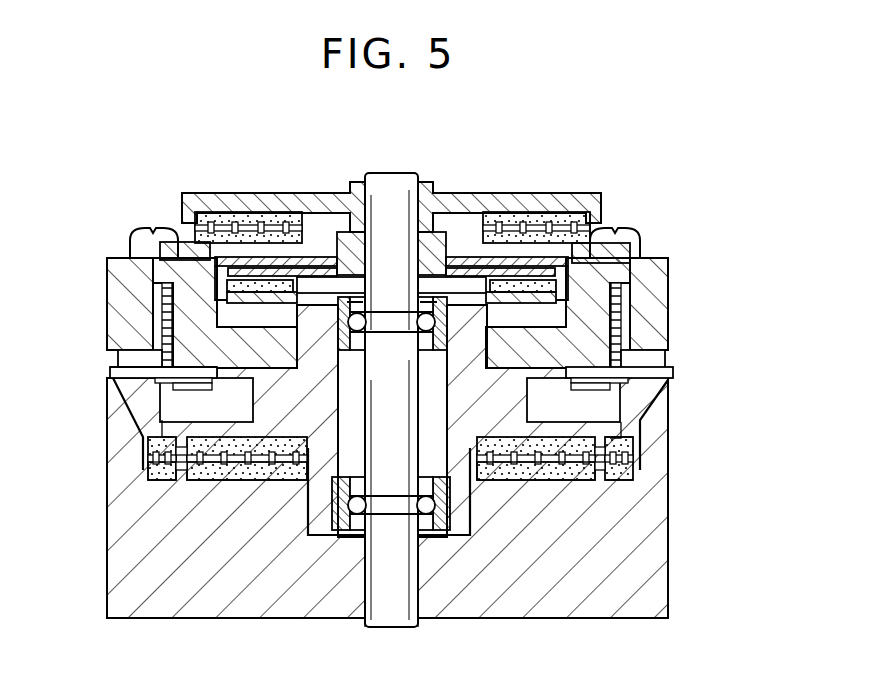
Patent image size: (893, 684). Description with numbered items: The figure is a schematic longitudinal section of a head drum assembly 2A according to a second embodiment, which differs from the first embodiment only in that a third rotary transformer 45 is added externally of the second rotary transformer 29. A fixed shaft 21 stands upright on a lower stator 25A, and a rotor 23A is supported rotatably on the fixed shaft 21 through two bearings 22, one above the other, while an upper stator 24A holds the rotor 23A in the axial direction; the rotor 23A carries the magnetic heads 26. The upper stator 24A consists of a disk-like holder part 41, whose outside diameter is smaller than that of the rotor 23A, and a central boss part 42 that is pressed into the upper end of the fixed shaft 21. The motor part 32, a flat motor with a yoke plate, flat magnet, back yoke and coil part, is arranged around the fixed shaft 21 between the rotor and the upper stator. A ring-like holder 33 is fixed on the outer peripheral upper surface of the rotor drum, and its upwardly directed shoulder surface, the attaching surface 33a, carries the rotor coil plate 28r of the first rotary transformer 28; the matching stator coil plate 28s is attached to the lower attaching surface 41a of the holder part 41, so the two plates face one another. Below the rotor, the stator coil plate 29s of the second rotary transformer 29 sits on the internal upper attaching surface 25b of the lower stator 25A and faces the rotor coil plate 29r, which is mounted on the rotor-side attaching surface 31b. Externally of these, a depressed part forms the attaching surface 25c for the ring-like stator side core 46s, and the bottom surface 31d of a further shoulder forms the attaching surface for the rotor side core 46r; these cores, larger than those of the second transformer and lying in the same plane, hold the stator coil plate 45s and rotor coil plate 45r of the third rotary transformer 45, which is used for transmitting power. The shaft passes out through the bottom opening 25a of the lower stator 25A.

The head drum assembly 2A is at (590, 172).
The fixed shaft 21 is at (391, 188).
The bearings 22 is at (342, 522).
The rotor 23A is at (752, 298).
The upper stator 24A is at (265, 173).
The lower stator 25A is at (752, 596).
The shaft opening 25a is at (368, 603).
The attaching surface 25b is at (530, 482).
The attaching surface 25c is at (172, 482).
The magnetic heads 26 is at (110, 367).
The first rotary transformer 28 is at (210, 232).
The rotor coil plate 28r is at (590, 237).
The stator coil plate 28s is at (543, 220).
The second rotary transformer 29 is at (563, 477).
The rotor coil plate 29r is at (215, 440).
The stator coil plate 29s is at (228, 482).
The attaching surface 31b is at (640, 424).
The bottom surface 31d is at (142, 440).
The motor part 32 is at (317, 287).
The ring-like holder 33 is at (647, 253).
The attaching surface 33a is at (182, 238).
The holder part 41 is at (503, 203).
The attaching surface 41a is at (488, 216).
The boss part 42 is at (358, 186).
The third rotary transformer 45 is at (148, 460).
The rotor coil plate 45r is at (626, 445).
The stator coil plate 45s is at (626, 472).
The rotor side core 46r is at (146, 450).
The stator side core 46s is at (150, 472).